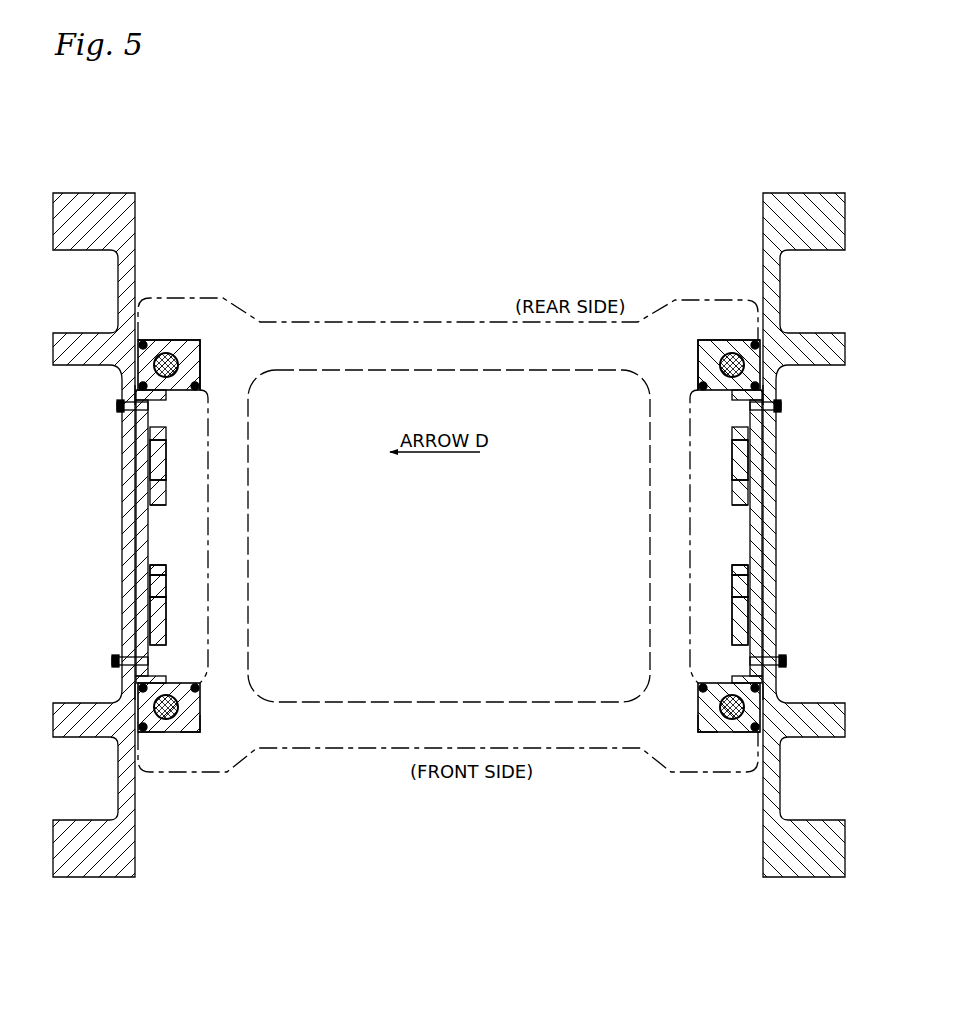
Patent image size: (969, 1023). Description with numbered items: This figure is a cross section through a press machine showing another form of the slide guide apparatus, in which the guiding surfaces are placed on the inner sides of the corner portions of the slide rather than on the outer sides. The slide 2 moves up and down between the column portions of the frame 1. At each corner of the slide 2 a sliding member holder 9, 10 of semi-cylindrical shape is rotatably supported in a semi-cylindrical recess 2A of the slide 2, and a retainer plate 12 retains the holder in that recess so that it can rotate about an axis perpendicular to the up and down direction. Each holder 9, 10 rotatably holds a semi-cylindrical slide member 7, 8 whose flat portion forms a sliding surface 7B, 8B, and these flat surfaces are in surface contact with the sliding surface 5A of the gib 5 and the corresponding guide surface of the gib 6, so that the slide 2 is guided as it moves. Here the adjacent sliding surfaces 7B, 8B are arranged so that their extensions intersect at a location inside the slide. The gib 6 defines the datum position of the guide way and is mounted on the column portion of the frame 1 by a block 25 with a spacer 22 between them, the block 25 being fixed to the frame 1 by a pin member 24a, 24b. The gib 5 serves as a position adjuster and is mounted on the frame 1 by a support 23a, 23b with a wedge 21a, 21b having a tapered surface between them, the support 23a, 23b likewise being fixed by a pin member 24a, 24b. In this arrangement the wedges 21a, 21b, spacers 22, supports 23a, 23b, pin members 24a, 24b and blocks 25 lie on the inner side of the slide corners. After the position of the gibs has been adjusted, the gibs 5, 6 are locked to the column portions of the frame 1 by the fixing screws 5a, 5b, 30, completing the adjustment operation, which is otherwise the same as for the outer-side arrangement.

The frame 1 is at (80, 200).
The slide 2 is at (488, 333).
The semi-cylindrical recess 2A is at (176, 342).
The gib 5 is at (122, 640).
The sliding surface 5A is at (148, 735).
The fixing screw 5a is at (113, 657).
The fixing screw 5b is at (119, 410).
The gib 6 is at (141, 352).
The semi-cylindrical slide member 7 is at (160, 735).
The sliding surface 7B is at (120, 690).
The semi-cylindrical slide member 8 is at (162, 342).
The sliding surface 8B is at (128, 394).
The sliding member holder 9 is at (195, 735).
The sliding member holder 10 is at (197, 342).
The retainer plate 12 is at (200, 388).
The wedge 21a is at (168, 633).
The wedge 21b is at (168, 633).
The spacer 22 is at (166, 430).
The support 23a is at (168, 571).
The support 23b is at (168, 571).
The pin member 24a is at (732, 479).
The pin member 24b is at (167, 481).
The block 25 is at (168, 503).
The fixing screw 30 is at (148, 504).